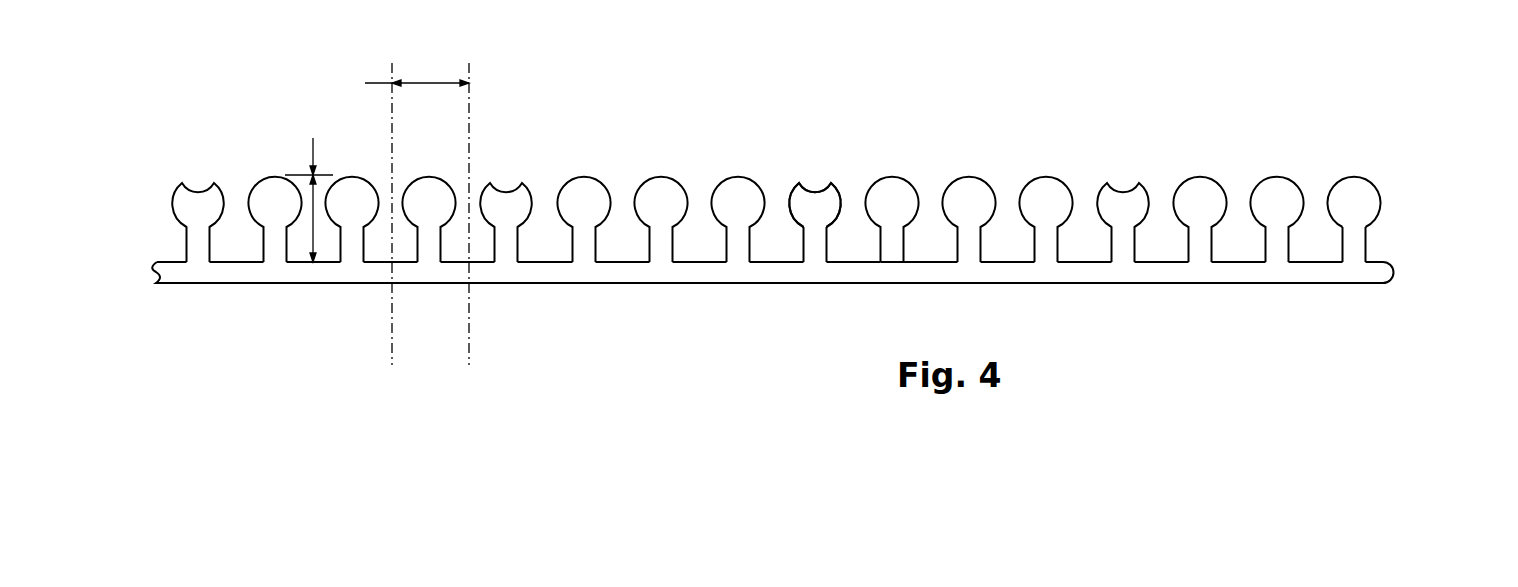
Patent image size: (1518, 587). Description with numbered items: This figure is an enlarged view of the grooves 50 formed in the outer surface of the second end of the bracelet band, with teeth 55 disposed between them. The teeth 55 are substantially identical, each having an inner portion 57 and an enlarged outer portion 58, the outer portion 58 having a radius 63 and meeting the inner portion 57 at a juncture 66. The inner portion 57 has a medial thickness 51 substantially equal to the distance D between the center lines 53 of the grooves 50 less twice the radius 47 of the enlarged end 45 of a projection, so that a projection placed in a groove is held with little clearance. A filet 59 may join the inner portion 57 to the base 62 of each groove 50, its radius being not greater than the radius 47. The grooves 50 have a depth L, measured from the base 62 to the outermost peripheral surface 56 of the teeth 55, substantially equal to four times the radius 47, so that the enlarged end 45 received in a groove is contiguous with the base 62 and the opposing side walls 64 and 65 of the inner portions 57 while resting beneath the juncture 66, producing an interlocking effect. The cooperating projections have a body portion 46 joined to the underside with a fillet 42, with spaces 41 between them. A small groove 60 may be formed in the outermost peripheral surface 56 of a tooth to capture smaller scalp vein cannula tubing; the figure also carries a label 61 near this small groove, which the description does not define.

The spaces 41 is at (793, 260).
The fillet 42 is at (1165, 262).
The enlarged end 45 is at (800, 212).
The body portion 46 is at (804, 232).
The radius 47 is at (1213, 184).
The grooves 50 is at (540, 195).
The medial thickness 51 is at (1000, 245).
The center lines 53 is at (384, 312).
The teeth 55 is at (652, 176).
The outermost peripheral surface 56 is at (275, 176).
The inner portion 57 is at (1367, 243).
The outer portion 58 is at (1380, 203).
The filet 59 is at (477, 251).
The small groove 60 is at (1125, 200).
The recess of hook-shaped post 61 is at (818, 210).
The base 62 is at (855, 262).
The radius 63 is at (745, 178).
The side wall 64 is at (1343, 242).
The side wall 65 is at (1289, 246).
The juncture 66 is at (904, 226).